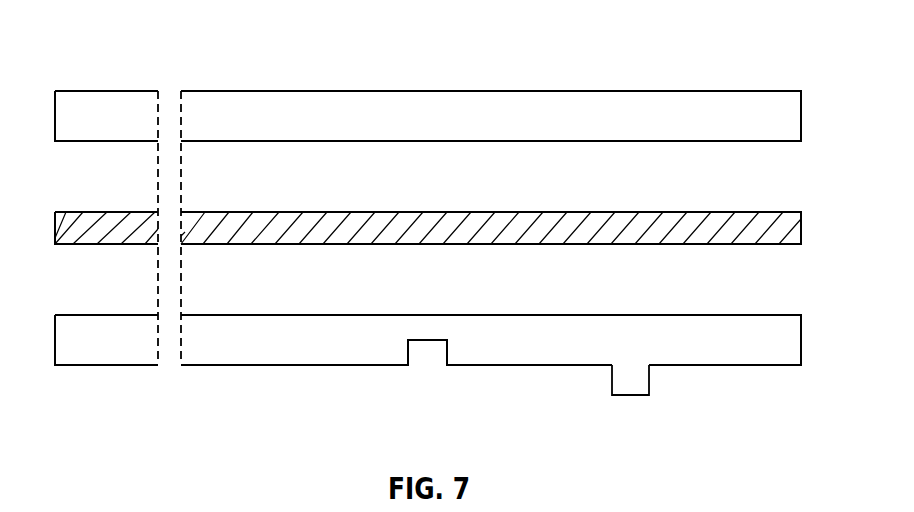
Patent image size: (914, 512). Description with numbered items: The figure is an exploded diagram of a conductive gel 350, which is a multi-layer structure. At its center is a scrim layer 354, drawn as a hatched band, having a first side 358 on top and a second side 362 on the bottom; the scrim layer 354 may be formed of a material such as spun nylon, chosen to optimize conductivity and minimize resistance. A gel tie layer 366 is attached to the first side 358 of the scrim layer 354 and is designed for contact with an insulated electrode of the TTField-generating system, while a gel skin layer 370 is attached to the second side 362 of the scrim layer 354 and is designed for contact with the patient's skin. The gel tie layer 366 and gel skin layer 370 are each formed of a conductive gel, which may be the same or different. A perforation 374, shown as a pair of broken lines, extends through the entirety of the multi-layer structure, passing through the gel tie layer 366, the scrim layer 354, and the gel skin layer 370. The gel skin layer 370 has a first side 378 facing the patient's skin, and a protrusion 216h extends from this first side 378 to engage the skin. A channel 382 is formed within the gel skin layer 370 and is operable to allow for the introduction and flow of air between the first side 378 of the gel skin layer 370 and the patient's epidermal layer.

The conductive gel 350 is at (778, 42).
The gel tie layer 366 is at (802, 115).
The scrim layer 354 is at (802, 225).
The first side 358 is at (92, 211).
The second side 362 is at (92, 245).
The gel skin layer 370 is at (802, 340).
The perforation 374 is at (166, 360).
The first side 378 is at (101, 369).
The channel 382 is at (405, 351).
The protrusion 216h is at (630, 398).